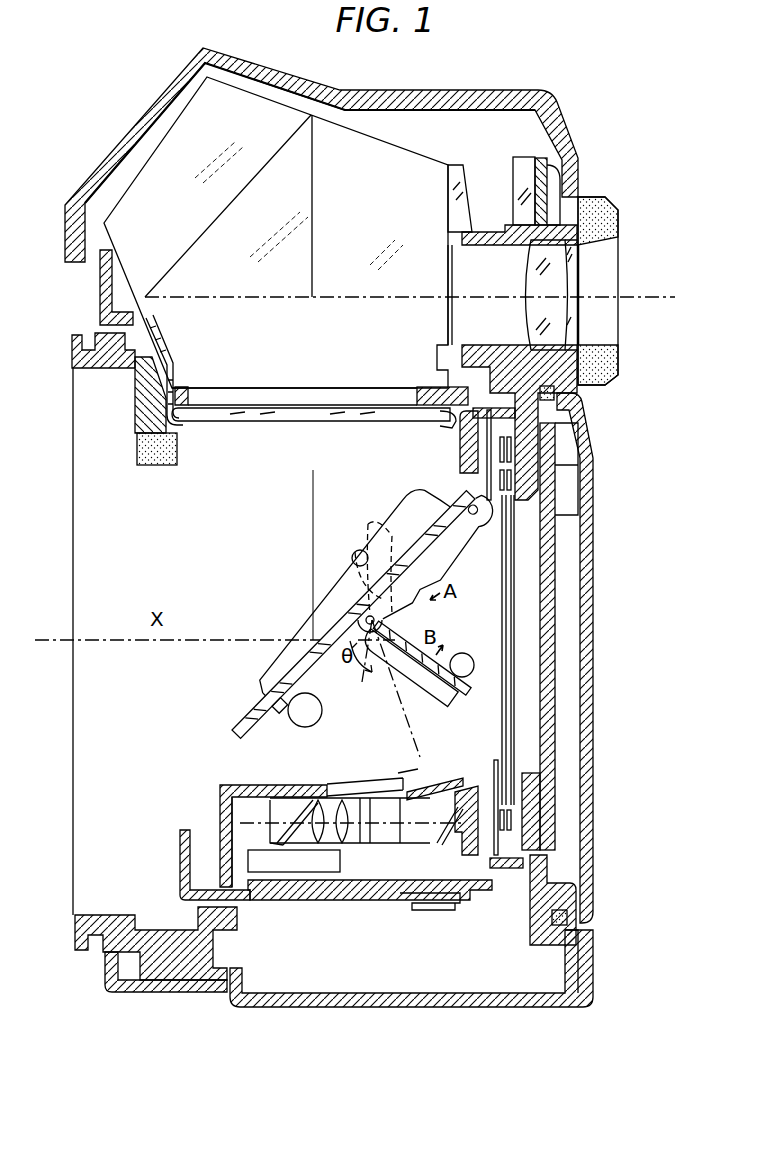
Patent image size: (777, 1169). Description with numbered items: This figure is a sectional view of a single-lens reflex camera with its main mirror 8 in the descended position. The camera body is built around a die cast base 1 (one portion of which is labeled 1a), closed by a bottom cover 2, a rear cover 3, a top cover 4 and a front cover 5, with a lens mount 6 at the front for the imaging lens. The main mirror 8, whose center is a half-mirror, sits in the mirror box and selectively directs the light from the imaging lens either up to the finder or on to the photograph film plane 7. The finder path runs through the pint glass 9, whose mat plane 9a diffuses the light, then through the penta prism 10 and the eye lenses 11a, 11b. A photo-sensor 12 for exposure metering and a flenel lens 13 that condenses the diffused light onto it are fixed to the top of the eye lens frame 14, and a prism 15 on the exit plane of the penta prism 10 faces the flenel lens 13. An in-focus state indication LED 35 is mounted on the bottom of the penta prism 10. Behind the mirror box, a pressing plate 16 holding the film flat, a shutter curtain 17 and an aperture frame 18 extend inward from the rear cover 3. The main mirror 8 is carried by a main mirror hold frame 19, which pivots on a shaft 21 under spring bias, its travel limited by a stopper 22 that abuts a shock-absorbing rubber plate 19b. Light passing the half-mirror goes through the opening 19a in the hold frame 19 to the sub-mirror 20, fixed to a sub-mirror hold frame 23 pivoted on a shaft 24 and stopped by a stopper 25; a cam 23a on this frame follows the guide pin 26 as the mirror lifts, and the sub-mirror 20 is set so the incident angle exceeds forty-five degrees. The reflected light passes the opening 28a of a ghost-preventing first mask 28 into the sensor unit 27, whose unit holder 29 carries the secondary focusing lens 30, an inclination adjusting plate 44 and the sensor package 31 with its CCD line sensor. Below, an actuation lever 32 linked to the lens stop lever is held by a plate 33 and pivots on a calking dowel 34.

The die cast base 1 is at (555, 880).
The inner wall of camera body 1a is at (230, 862).
The bottom cover 2 is at (540, 1007).
The rear cover 3 is at (594, 572).
The top cover 4 is at (366, 96).
The front cover 5 is at (179, 993).
The lens mount 6 is at (74, 922).
The photograph film plane 7 is at (527, 592).
The main mirror 8 is at (240, 718).
The pint glass 9 is at (269, 422).
The mat plane 9a is at (209, 412).
The penta prism 10 is at (270, 108).
The eye lens 11a is at (557, 280).
The eye lens 11b is at (571, 313).
The photo-sensor 12 is at (553, 170).
The flenel lens 13 is at (521, 185).
The eye lens frame 14 is at (598, 366).
The prism 15 is at (456, 195).
The pressing plate 16 is at (549, 543).
The shutter curtain 17 is at (506, 676).
The aperture frame 18 is at (471, 786).
The main mirror hold frame 19 is at (236, 742).
The opening 19a is at (362, 642).
The rubber plate 19b is at (280, 714).
The sub-mirror 20 is at (420, 682).
The shaft 21 is at (477, 516).
The stopper 22 is at (322, 716).
The sub-mirror hold frame 23 is at (452, 690).
The cam 23a is at (378, 538).
The shaft 24 is at (376, 620).
The stopper 25 is at (470, 659).
The guide pin 26 is at (353, 556).
The sensor unit 27 is at (396, 836).
The first mask 28 is at (434, 776).
The opening 28a is at (408, 772).
The unit holder 29 is at (440, 832).
The secondary focusing lens 30 is at (350, 834).
The sensor package 31 is at (283, 873).
The actuation lever 32 is at (181, 874).
The plate 33 is at (310, 891).
The calking dowel 34 is at (440, 911).
The in-focus state indication LED 35 is at (432, 390).
The inclination adjusting plate 44 is at (262, 872).